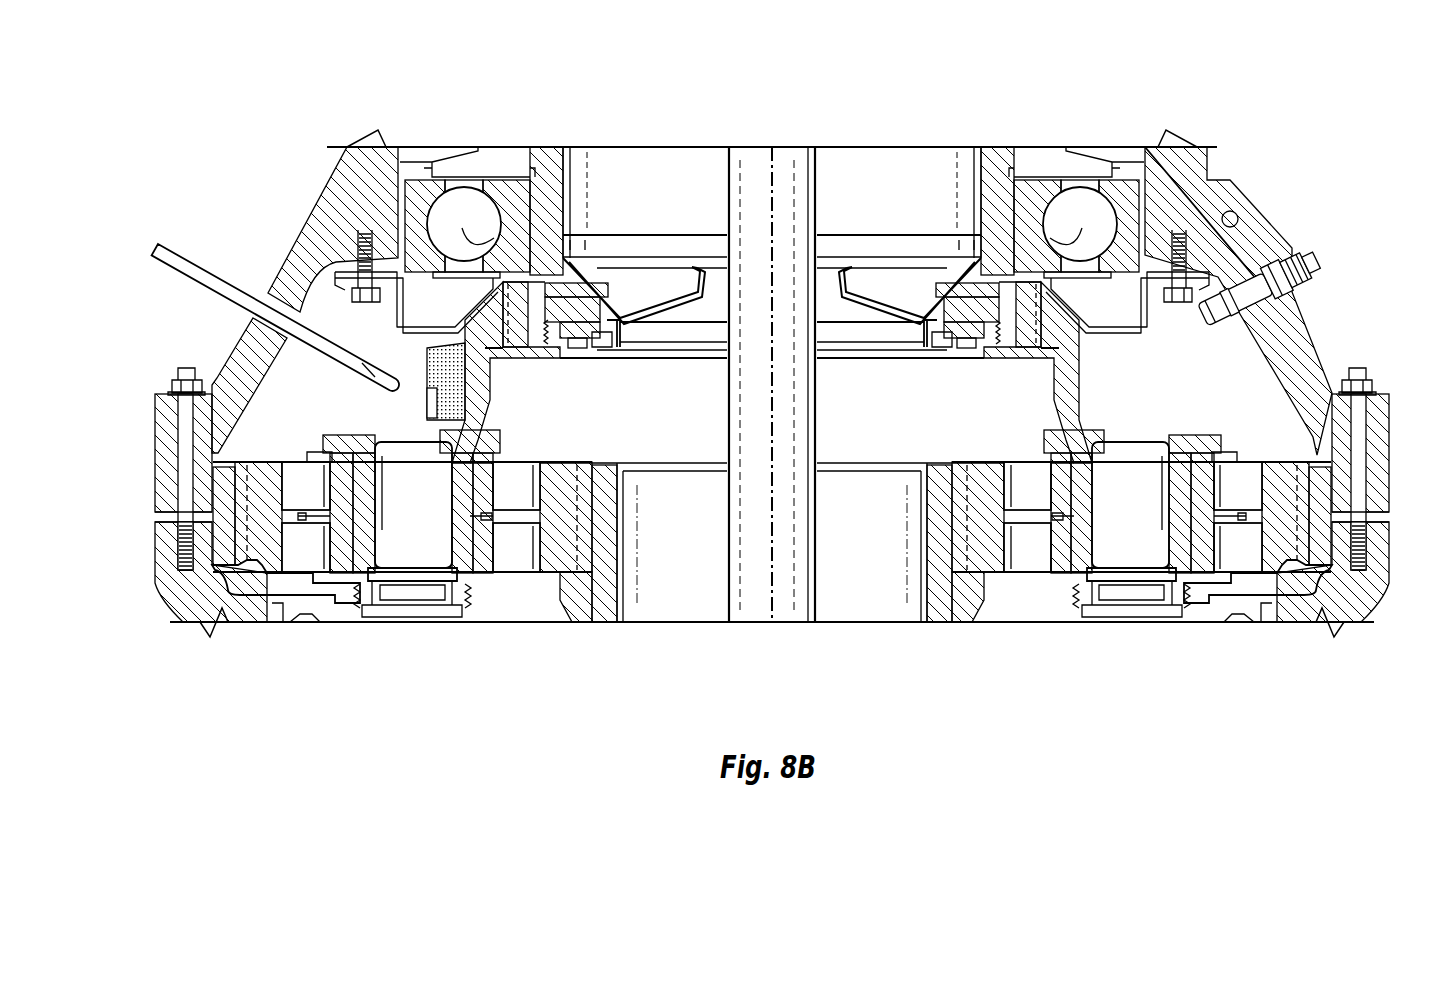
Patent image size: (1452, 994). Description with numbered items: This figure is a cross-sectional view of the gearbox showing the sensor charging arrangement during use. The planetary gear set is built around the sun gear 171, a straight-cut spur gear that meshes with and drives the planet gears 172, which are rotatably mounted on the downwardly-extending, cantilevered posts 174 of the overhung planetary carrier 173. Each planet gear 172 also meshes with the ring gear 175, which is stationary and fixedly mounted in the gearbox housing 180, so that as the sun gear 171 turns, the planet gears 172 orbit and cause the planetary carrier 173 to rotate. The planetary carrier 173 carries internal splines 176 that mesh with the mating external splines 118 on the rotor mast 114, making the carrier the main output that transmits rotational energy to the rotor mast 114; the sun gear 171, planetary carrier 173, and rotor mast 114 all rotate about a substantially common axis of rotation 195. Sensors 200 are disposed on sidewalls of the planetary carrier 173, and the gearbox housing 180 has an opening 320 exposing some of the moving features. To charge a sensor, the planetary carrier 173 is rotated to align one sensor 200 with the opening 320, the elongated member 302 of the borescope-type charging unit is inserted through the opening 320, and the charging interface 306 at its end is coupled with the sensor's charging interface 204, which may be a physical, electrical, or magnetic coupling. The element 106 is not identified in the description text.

The sensor 106 is at (1328, 249).
The rotor mast 114 is at (570, 157).
The external splines 118 is at (772, 212).
The sun gear 171 is at (932, 598).
The planet gears 172 is at (268, 478).
The planetary carrier 173 is at (483, 430).
The posts 174 is at (367, 545).
The ring gear 175 is at (223, 472).
The internal splines 176 is at (514, 306).
The gearbox housing 180 is at (162, 450).
The axis of rotation 195 is at (787, 158).
The sensors 200 is at (419, 358).
The charging interface 204 is at (427, 404).
The elongated member 302 is at (212, 272).
The charging interface 306 is at (362, 379).
The opening 320 is at (241, 313).